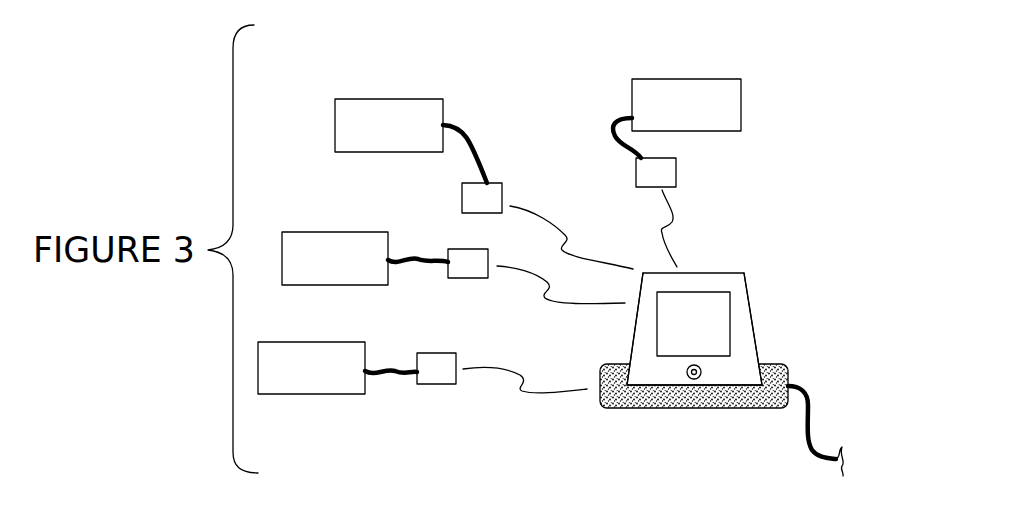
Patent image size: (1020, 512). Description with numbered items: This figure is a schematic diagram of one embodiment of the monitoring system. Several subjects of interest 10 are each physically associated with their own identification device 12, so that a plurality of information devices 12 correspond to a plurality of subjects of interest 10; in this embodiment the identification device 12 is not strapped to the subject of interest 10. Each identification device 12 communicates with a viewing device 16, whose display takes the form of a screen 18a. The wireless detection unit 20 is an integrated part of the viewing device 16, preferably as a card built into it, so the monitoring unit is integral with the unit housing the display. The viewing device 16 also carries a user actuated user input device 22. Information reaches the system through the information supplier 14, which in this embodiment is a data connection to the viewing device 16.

The subject of interest 10 is at (397, 96).
The identification device 12 is at (505, 178).
The information supplier 14 is at (628, 408).
The viewing device 16 is at (760, 254).
The screen 18a is at (716, 312).
The wireless detection unit 20 is at (757, 346).
The user input device 22 is at (710, 373).